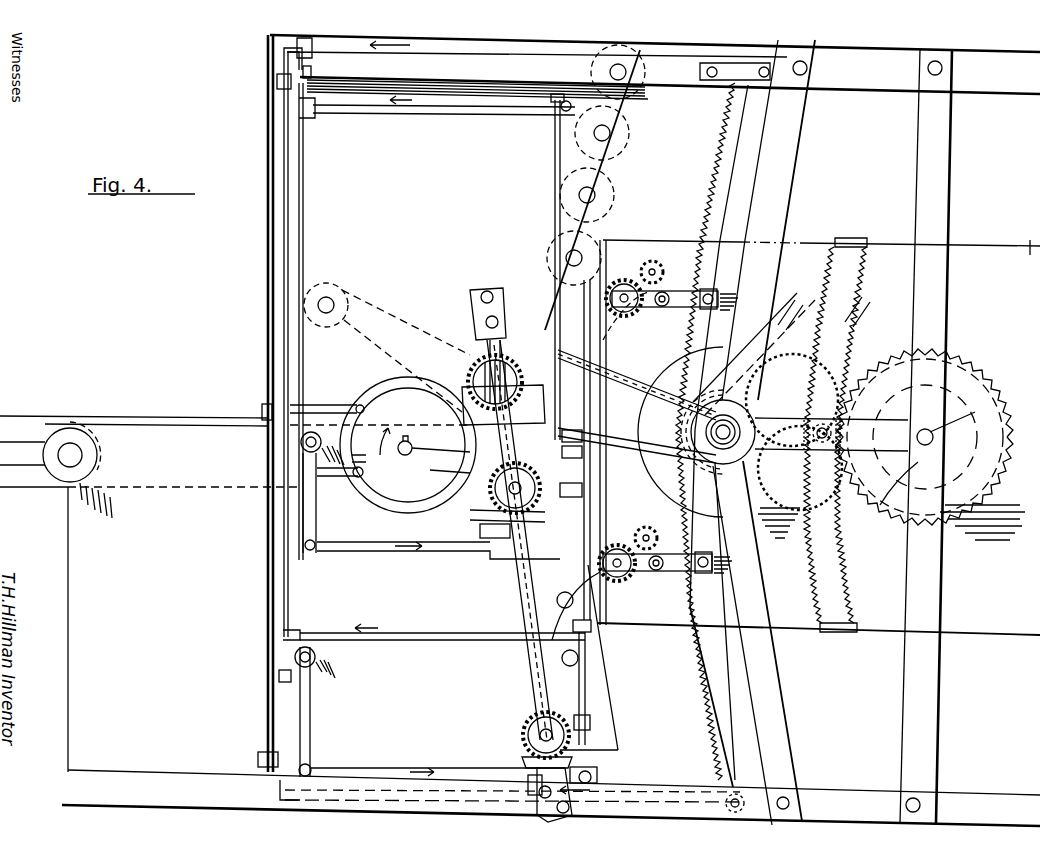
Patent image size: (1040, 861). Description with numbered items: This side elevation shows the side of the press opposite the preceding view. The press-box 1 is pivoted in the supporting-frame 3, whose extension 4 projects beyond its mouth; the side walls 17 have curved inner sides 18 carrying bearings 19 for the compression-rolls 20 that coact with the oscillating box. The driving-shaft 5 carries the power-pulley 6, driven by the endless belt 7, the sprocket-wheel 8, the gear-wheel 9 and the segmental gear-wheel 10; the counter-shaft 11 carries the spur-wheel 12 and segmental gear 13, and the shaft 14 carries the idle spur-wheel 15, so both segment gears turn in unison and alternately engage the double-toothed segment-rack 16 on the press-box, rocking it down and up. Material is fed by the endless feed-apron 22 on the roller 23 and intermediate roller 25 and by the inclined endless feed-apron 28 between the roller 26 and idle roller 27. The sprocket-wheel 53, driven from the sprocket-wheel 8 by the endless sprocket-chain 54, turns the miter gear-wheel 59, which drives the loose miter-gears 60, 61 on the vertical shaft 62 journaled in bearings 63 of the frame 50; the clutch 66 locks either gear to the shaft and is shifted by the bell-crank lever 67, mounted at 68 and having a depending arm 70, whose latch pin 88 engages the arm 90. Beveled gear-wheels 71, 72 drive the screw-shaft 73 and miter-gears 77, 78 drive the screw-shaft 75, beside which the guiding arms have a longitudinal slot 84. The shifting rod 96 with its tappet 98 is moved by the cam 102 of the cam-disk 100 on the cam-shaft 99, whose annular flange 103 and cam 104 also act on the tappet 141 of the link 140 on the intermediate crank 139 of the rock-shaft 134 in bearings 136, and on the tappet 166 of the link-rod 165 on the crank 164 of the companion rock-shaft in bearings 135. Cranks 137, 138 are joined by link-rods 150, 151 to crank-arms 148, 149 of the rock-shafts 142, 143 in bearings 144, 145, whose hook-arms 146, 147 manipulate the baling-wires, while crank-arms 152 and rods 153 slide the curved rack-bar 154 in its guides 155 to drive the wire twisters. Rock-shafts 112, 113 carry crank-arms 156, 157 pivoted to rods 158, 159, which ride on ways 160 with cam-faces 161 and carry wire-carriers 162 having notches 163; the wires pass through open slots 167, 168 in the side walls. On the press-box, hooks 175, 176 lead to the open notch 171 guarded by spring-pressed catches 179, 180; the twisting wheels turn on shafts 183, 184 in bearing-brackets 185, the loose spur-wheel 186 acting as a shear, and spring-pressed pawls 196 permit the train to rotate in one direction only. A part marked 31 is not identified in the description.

The machine 1 is at (1009, 331).
The swinging frame bars 3 is at (876, 108).
The top frame rail 4 is at (462, 62).
The pivot shaft 5 is at (723, 440).
The gear 6 is at (780, 478).
The shaft 7 is at (783, 354).
The hub disk 8 is at (718, 432).
The wheel 9 is at (712, 480).
The gear 10 is at (792, 400).
The shaft 11 is at (953, 425).
The gear wheel 12 is at (948, 403).
The gear hub 13 is at (925, 437).
The arm 14 is at (833, 432).
The spoke 15 is at (866, 495).
The rack bar 16 is at (835, 435).
The table 17 is at (416, 227).
The belt 18 is at (620, 166).
The roller shaft 19 is at (620, 203).
The roller 20 is at (630, 120).
The arm 22 is at (162, 417).
The pin 23 is at (412, 442).
The pivot hub 25 is at (60, 430).
The disk 26 is at (440, 372).
The pulley 27 is at (340, 300).
The belt 28 is at (385, 310).
The frame member 31 is at (1031, 241).
The pin 50 is at (515, 597).
The bracket frame 53 is at (520, 340).
The connecting bar 54 is at (656, 373).
The worm gear 59 is at (470, 362).
The shaft 60 is at (564, 419).
The shaft 61 is at (488, 355).
The shaft 62 is at (522, 655).
The bearing bracket 63 is at (475, 318).
The bearing 66 is at (556, 404).
The bearing 67 is at (440, 419).
The bearing 68 is at (541, 389).
The gear 70 is at (488, 500).
The gear 71 is at (540, 510).
The bearing block 72 is at (612, 529).
The bearing block 73 is at (573, 433).
The gear 75 is at (522, 720).
The gear 77 is at (530, 716).
The bearing cap 78 is at (522, 762).
The link 84 is at (450, 477).
The bracket 88 is at (470, 516).
The bracket 90 is at (480, 540).
The link 96 is at (445, 459).
The link 98 is at (441, 454).
The arrow pawl 99 is at (383, 444).
The rod 100 is at (380, 414).
The notch 102 is at (354, 449).
The ring 103 is at (395, 378).
The inner ring 104 is at (392, 500).
The roller 112 is at (300, 438).
The roller 113 is at (318, 655).
The frame rail 134 is at (304, 255).
The block 135 is at (276, 82).
The block 136 is at (279, 676).
The bracket 137 is at (315, 108).
The frame rail 138 is at (272, 268).
The bracket 139 is at (280, 490).
The pin 140 is at (318, 500).
The arm 141 is at (360, 474).
The bar 142 is at (555, 147).
The rod 143 is at (590, 672).
The bar 144 is at (554, 92).
The block 145 is at (592, 720).
The block 146 is at (582, 490).
The pin 147 is at (590, 740).
The pin 148 is at (560, 104).
The cap 149 is at (592, 645).
The rail 150 is at (440, 110).
The rail 151 is at (423, 642).
The belt 152 is at (310, 55).
The belt 153 is at (555, 48).
The curved rack 154 is at (712, 156).
The bracket 155 is at (720, 82).
The rail 156 is at (300, 540).
The bar 157 is at (311, 720).
The rail 158 is at (397, 552).
The rail 159 is at (390, 770).
The pin 160 is at (478, 575).
The block 161 is at (510, 562).
The block 162 is at (482, 535).
The bearing 163 is at (524, 750).
The block 164 is at (262, 404).
The rod 165 is at (330, 400).
The rod 166 is at (395, 408).
The lever 167 is at (611, 509).
The bar 168 is at (620, 752).
The lever 171 is at (640, 270).
The lever 175 is at (556, 300).
The lever 176 is at (552, 615).
The lever 179 is at (623, 599).
The link 180 is at (622, 456).
The gear 183 is at (630, 312).
The gear 184 is at (608, 552).
The bracket bar 185 is at (718, 300).
The pin 186 is at (312, 70).
The pinion 196 is at (656, 262).